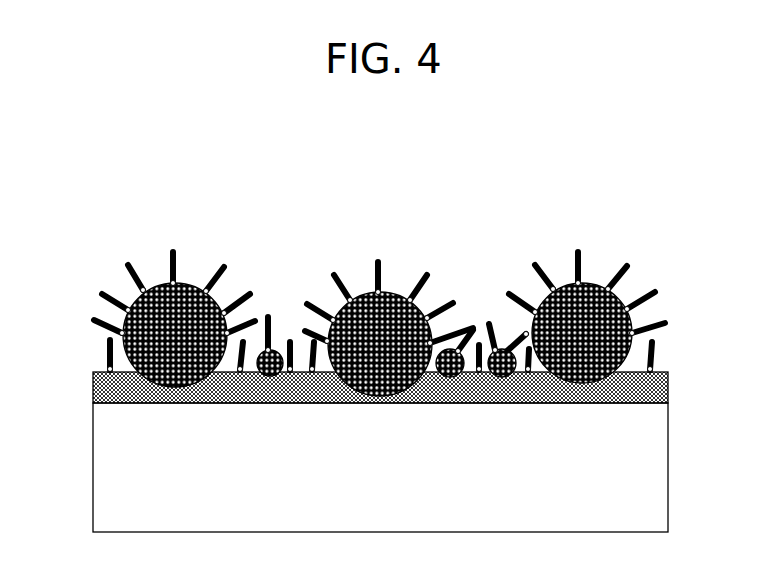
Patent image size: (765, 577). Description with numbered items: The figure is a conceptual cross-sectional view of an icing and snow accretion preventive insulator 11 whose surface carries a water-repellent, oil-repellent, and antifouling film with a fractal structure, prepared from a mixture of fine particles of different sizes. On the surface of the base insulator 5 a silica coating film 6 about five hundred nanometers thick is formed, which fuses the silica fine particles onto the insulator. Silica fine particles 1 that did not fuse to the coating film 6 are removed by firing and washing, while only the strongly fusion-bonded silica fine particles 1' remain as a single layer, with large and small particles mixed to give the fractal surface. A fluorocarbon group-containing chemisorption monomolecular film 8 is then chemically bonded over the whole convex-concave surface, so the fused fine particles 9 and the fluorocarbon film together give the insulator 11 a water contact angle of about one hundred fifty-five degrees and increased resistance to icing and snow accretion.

The silica fine particles 1 is at (204, 299).
The silica fine particles 1' is at (617, 314).
The insulator 5 is at (668, 462).
The coating film 6 is at (668, 385).
The fluorocarbon group-containing chemisorption monomolecular film 8 is at (630, 265).
The fused water-repellent, oil-repellent, and antifouling fine particles 9 is at (393, 238).
The insulator 11 is at (75, 241).